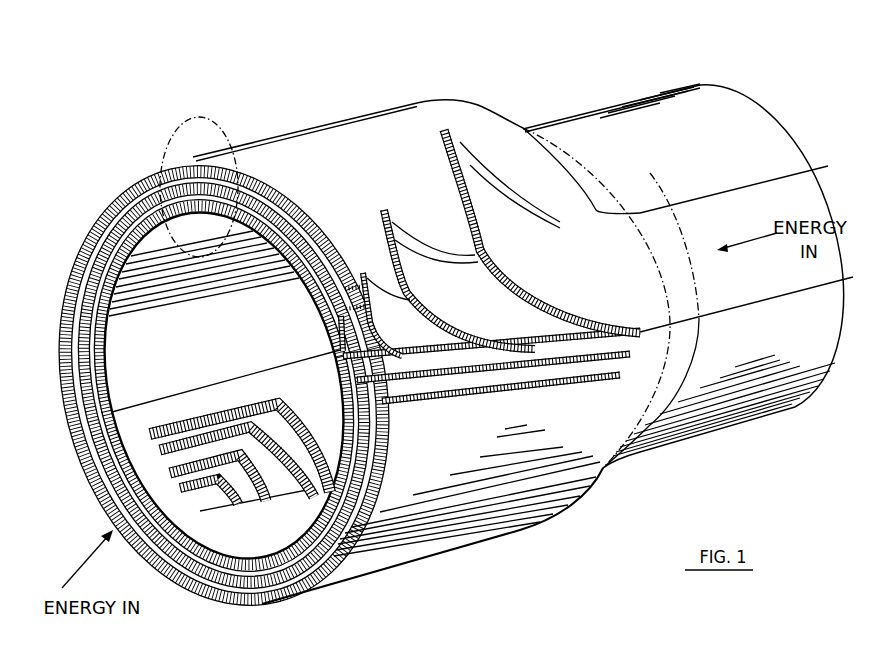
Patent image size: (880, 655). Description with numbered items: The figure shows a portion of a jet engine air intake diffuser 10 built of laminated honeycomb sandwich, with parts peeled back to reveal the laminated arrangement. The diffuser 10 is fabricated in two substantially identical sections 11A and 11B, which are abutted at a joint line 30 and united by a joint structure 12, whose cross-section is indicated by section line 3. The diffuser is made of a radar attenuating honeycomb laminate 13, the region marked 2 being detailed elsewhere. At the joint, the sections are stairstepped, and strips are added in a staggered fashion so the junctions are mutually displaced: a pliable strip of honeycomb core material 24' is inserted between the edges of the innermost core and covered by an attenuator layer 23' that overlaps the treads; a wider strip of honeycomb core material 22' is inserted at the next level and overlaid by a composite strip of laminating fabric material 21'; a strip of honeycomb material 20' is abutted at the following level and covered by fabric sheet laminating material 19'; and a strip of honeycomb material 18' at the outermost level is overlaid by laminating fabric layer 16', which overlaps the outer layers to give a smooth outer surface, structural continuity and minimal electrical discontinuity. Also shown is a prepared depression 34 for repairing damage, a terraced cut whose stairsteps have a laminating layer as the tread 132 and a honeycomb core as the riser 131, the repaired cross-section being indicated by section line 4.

The jet engine air intake diffuser 10 is at (430, 68).
The detail region of FIG. 2 is at (172, 150).
The diffuser section 11A is at (317, 160).
The diffuser section 11B is at (583, 443).
The joint structure 12 is at (80, 463).
The radar attenuating honeycomb laminate 13 is at (227, 593).
The section line 3- 3 is at (648, 182).
The section line 4- 4 is at (157, 408).
The joint line 30 is at (170, 393).
The prepared depression 34 is at (153, 433).
The riser 131 is at (237, 423).
The tread 132 is at (253, 447).
The laminating fabric layer 16' is at (550, 178).
The strip of honeycomb material 18' is at (542, 221).
The fabric sheet laminating material 19' is at (422, 244).
The strip of honeycomb material 20' is at (448, 247).
The composite strip of laminating fabric material 21' is at (368, 282).
The strip of honeycomb core material 22' is at (393, 334).
The attenuator layer 23' is at (347, 259).
The strip of honeycomb core material 24' is at (477, 358).